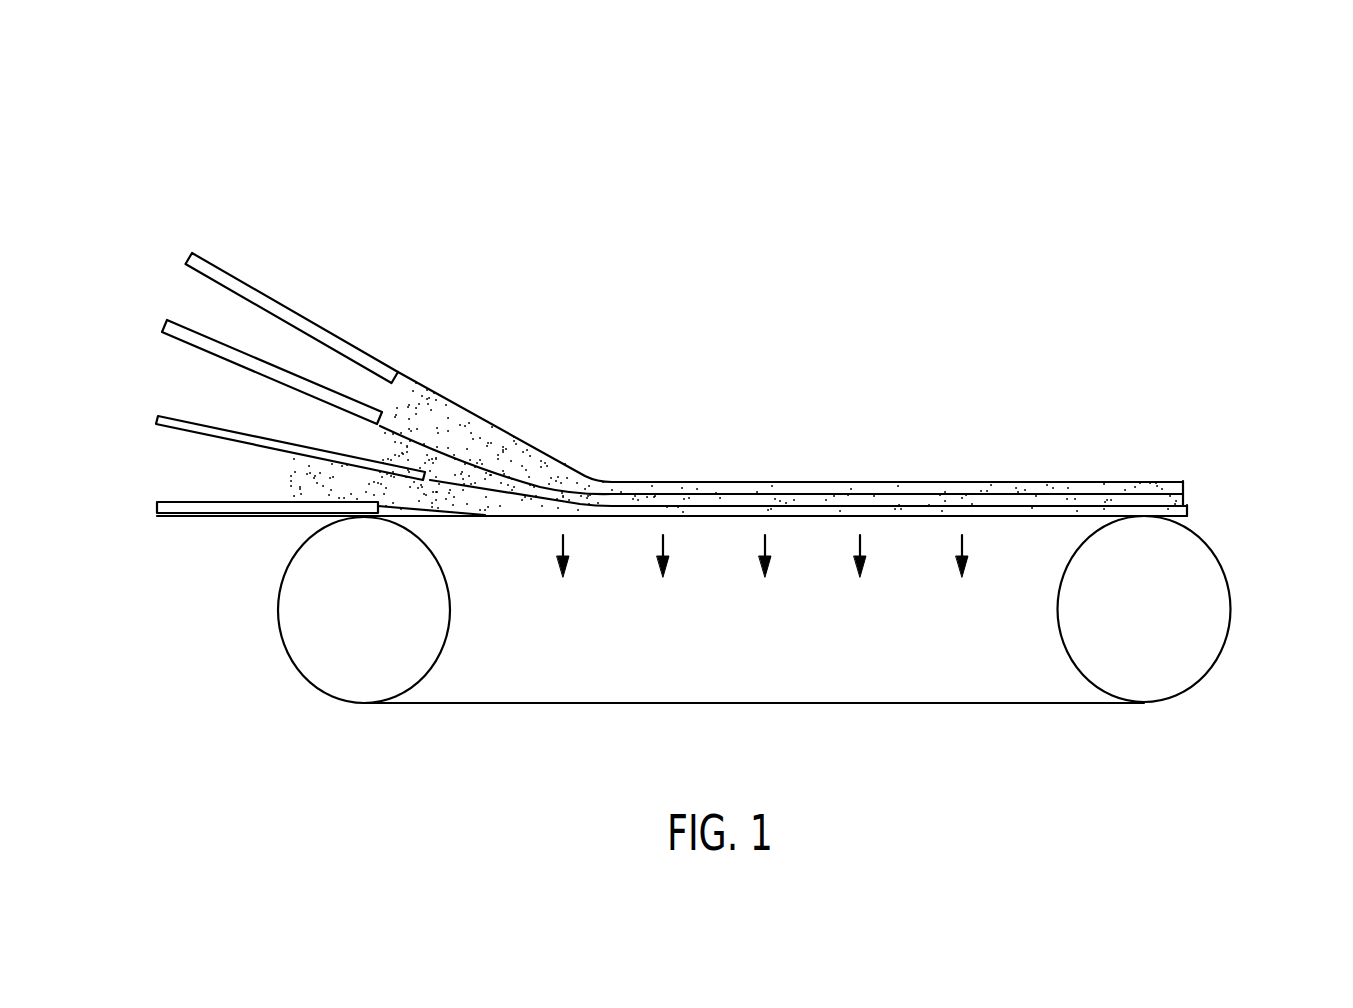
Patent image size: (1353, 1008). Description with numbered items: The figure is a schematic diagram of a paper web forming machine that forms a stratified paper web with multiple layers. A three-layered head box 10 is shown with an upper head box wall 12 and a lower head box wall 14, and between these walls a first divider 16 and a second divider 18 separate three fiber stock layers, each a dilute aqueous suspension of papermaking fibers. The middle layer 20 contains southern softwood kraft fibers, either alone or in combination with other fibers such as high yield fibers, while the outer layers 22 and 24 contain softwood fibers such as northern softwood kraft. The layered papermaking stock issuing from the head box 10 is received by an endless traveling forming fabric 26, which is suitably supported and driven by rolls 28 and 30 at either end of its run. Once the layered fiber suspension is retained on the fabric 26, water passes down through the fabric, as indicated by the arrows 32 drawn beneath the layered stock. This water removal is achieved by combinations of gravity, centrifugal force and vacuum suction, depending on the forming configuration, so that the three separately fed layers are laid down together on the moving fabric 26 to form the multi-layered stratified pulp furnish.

The three-layered head box 10 is at (285, 200).
The upper head box wall 12 is at (332, 333).
The lower head box wall 14 is at (184, 516).
The first divider 16 is at (195, 330).
The second divider 18 is at (156, 421).
The middle layer 20 is at (485, 487).
The outer layer 22 is at (627, 482).
The outer layer 24 is at (512, 506).
The endless traveling forming fabric 26 is at (983, 704).
The roll 28 is at (298, 627).
The roll 30 is at (1213, 623).
The arrows 32 is at (663, 540).